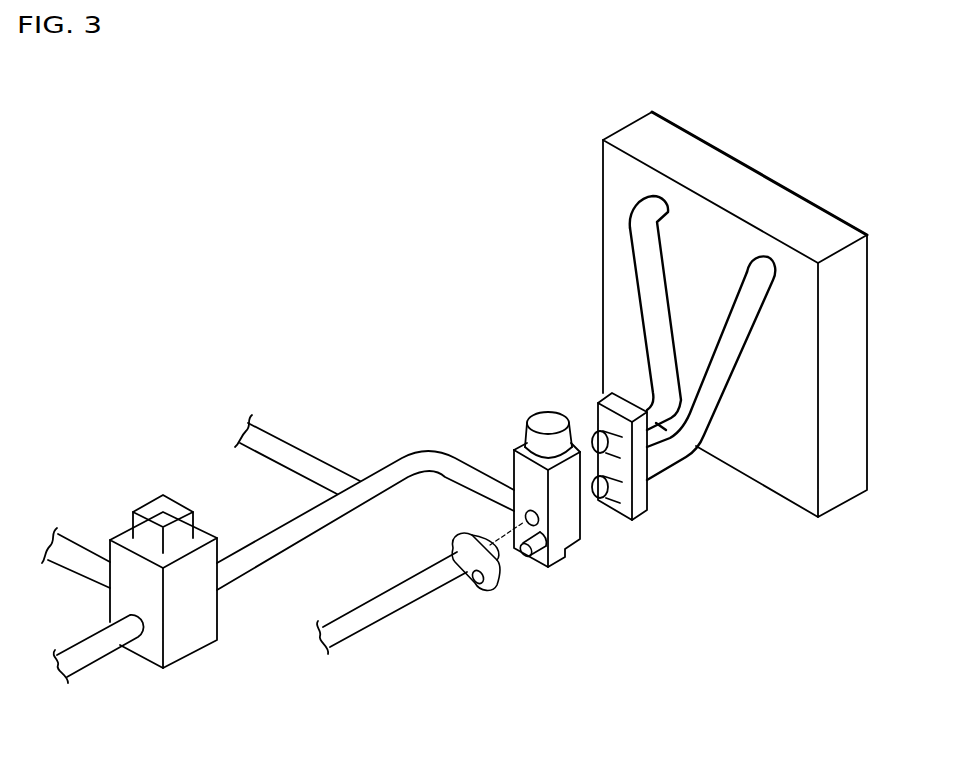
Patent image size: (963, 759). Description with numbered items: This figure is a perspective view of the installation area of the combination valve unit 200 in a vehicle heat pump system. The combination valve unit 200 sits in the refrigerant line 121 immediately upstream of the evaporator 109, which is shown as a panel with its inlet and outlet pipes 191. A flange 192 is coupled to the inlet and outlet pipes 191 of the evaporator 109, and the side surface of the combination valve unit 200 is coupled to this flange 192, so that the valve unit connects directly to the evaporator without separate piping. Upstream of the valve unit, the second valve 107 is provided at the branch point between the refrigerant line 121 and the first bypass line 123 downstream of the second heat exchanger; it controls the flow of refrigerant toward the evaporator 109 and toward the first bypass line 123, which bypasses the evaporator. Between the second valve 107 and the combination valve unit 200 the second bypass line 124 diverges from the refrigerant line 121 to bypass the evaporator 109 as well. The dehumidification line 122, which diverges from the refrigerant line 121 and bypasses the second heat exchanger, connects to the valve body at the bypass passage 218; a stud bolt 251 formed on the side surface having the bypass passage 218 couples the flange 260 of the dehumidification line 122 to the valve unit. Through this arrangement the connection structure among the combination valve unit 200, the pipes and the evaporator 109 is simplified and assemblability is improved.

The second valve 107 is at (147, 650).
The evaporator 109 is at (706, 172).
The refrigerant line 121 is at (88, 650).
The dehumidification line 122 is at (382, 613).
The first bypass line 123 is at (87, 549).
The second bypass line 124 is at (303, 452).
The inlet and outlet pipes 191 is at (660, 252).
The flange 192 is at (640, 500).
The combination valve unit 200 is at (585, 532).
The bypass passage 218 is at (558, 562).
The stud bolt 251 is at (528, 556).
The flange 260 is at (490, 590).